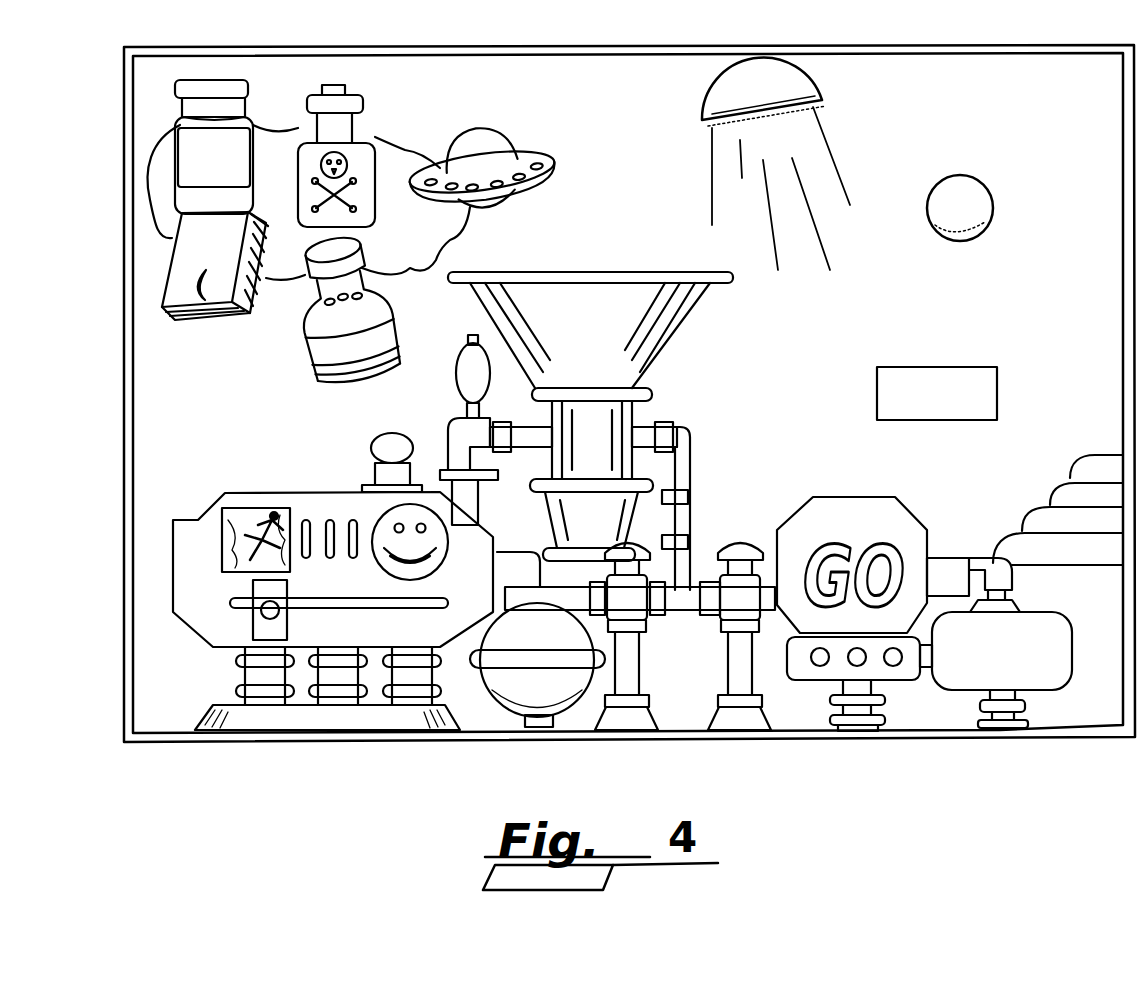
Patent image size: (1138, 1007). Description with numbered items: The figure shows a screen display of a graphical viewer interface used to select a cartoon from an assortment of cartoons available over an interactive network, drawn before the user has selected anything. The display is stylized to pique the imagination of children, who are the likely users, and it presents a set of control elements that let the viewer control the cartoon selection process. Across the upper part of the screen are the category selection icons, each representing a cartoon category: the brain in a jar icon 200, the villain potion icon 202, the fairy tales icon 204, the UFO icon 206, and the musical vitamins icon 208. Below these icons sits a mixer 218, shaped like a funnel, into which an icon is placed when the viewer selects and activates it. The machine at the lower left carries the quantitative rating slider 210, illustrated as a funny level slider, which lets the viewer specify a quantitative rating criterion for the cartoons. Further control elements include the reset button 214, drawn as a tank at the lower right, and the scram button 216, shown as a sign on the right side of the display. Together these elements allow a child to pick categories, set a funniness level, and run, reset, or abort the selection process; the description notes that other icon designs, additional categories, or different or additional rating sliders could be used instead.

The brain in a jar icon 200 is at (285, 87).
The villain potion icon 202 is at (362, 103).
The fairy tales icon 204 is at (205, 326).
The UFO icon 206 is at (517, 147).
The musical vitamins icon 208 is at (305, 330).
The quantitative rating slider 210 is at (265, 618).
The reset button 214 is at (1012, 657).
The scram button 216 is at (920, 367).
The mixer 218 is at (722, 285).